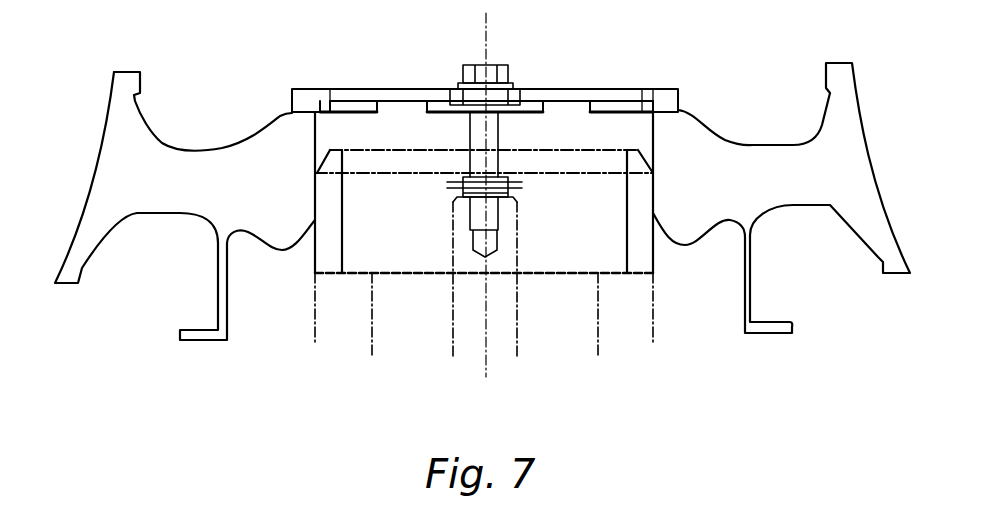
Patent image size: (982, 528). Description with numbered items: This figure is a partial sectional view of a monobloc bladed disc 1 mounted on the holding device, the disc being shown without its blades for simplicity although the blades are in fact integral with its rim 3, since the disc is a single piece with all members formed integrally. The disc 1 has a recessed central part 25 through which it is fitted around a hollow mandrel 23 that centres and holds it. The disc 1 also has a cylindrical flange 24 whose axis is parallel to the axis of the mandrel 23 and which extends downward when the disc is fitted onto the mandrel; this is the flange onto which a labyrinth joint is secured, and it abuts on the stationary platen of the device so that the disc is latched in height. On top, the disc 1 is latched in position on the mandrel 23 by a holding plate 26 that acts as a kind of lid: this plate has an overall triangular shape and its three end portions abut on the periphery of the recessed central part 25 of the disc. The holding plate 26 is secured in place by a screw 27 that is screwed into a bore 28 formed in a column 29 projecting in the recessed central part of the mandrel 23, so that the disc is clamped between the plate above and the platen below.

The monobloc bladed disc 1 is at (150, 290).
The rim 3 is at (847, 120).
The mandrel 23 is at (327, 258).
The cylindrical flange 24 is at (738, 300).
The recessed central part 25 is at (652, 125).
The holding plate 26 is at (366, 97).
The screw 27 is at (490, 67).
The bore 28 is at (485, 258).
The column 29 is at (450, 330).